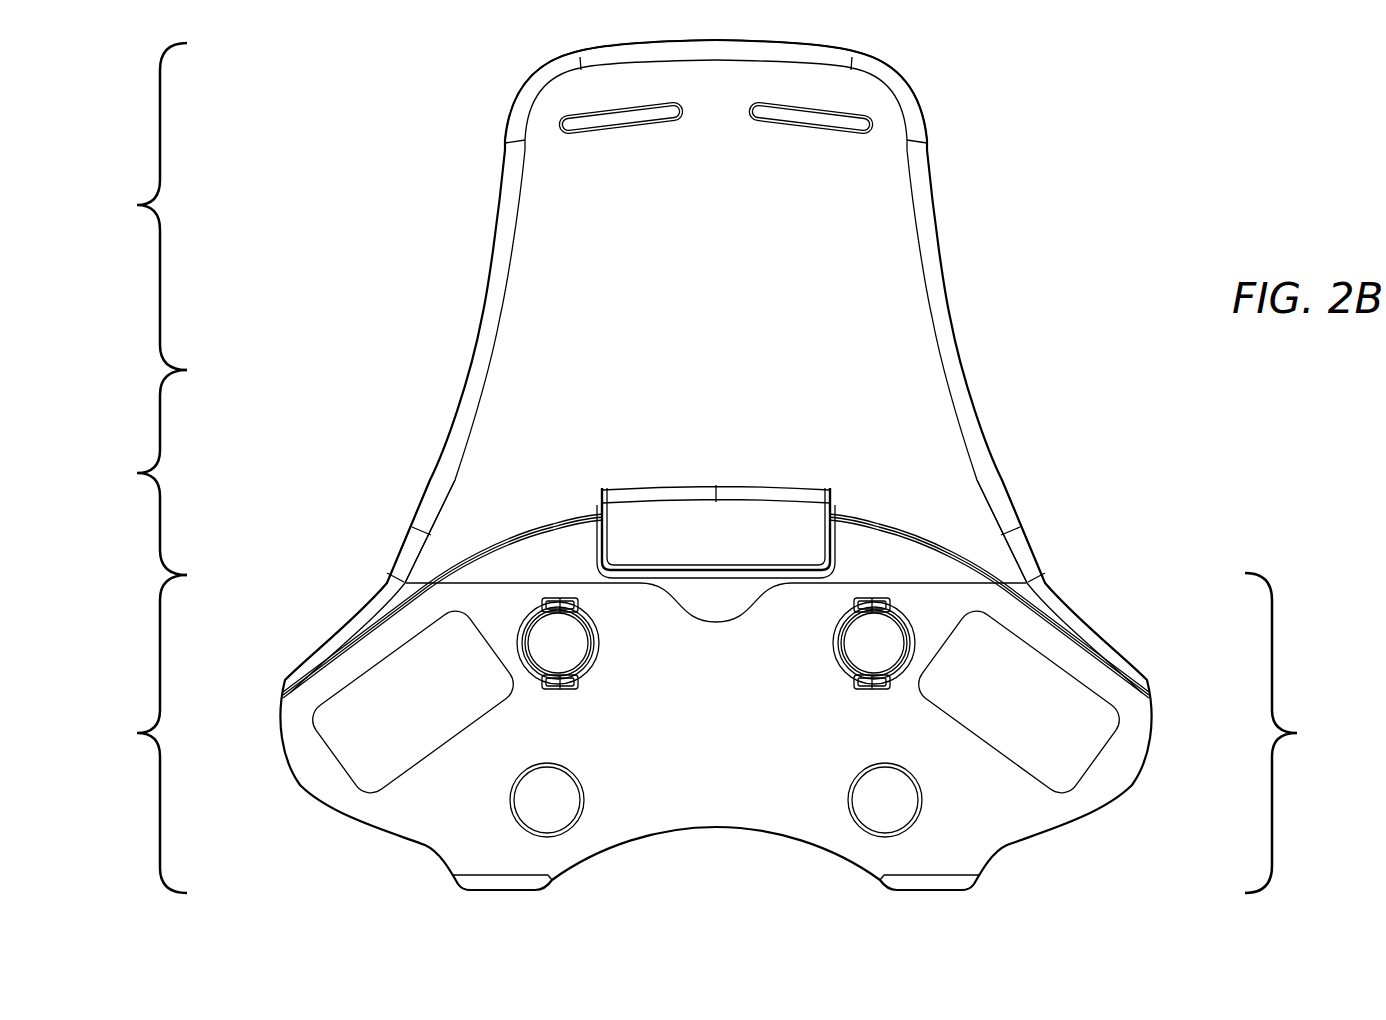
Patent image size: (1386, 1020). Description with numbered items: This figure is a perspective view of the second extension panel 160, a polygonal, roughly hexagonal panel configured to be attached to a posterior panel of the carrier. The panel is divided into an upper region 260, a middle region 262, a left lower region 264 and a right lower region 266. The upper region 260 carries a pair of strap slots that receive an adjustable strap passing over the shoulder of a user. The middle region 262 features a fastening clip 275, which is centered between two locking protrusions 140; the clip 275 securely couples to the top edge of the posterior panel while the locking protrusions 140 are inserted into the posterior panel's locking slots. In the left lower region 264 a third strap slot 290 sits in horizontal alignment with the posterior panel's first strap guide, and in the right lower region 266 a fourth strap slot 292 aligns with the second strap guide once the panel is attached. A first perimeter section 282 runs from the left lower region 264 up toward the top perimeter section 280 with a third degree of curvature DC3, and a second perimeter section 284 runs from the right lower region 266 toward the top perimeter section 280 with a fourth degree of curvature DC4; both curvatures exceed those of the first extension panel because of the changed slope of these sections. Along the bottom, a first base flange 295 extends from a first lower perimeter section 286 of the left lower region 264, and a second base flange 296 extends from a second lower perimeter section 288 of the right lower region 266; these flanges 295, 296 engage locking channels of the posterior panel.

The second extension panel 160 is at (1092, 293).
The upper region 260 is at (138, 206).
The middle region 262 is at (138, 472).
The left lower region 264 is at (138, 734).
The right lower region 266 is at (1295, 733).
The fastening clip 275 is at (785, 531).
The top perimeter section 280 is at (836, 49).
The first perimeter section 282 is at (411, 527).
The second perimeter section 284 is at (1022, 528).
The first lower perimeter section 286 is at (482, 891).
The second lower perimeter section 288 is at (913, 891).
The third strap slot 290 is at (450, 715).
The fourth strap slot 292 is at (975, 702).
The first base flange 295 is at (523, 880).
The second base flange 296 is at (931, 880).
The locking protrusions 140 is at (568, 643).
The third degree of curvature DC3 is at (342, 604).
The fourth degree of curvature DC4 is at (1090, 604).